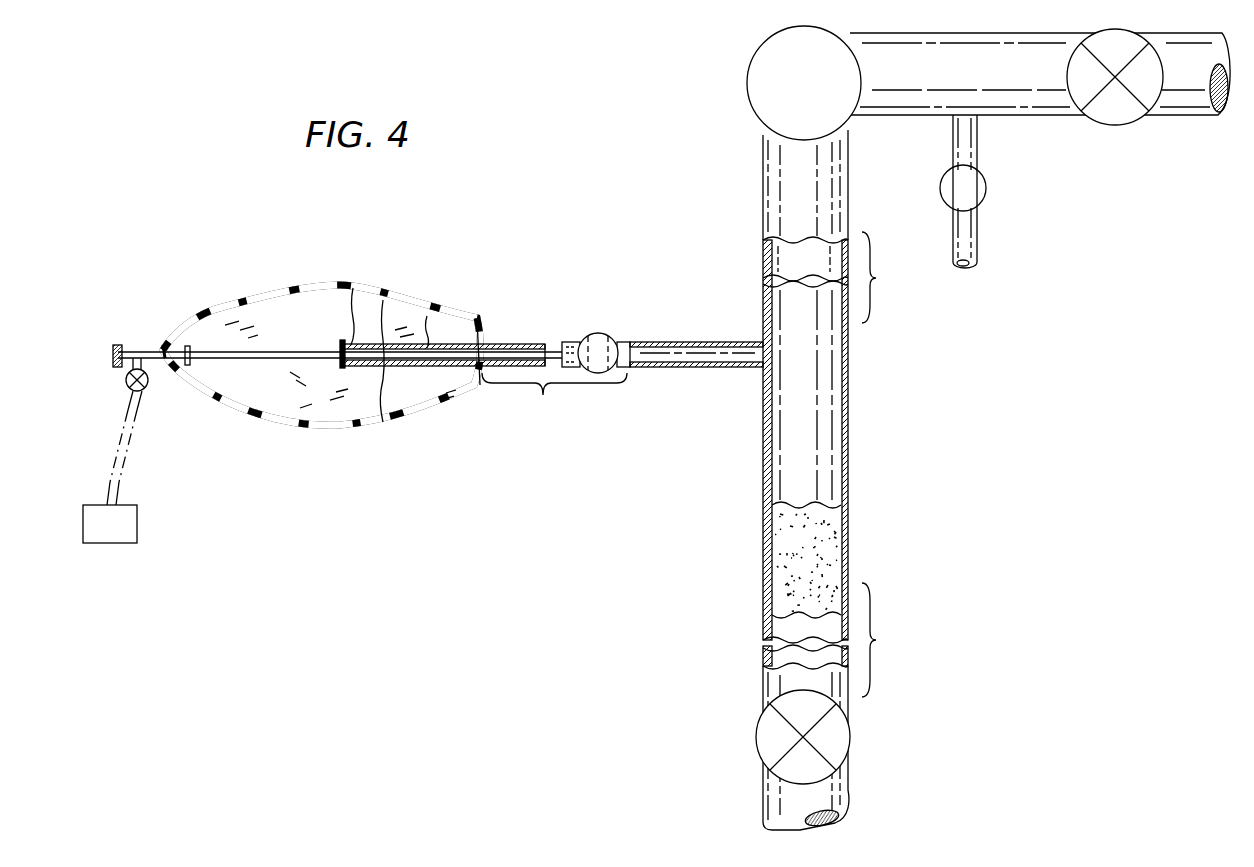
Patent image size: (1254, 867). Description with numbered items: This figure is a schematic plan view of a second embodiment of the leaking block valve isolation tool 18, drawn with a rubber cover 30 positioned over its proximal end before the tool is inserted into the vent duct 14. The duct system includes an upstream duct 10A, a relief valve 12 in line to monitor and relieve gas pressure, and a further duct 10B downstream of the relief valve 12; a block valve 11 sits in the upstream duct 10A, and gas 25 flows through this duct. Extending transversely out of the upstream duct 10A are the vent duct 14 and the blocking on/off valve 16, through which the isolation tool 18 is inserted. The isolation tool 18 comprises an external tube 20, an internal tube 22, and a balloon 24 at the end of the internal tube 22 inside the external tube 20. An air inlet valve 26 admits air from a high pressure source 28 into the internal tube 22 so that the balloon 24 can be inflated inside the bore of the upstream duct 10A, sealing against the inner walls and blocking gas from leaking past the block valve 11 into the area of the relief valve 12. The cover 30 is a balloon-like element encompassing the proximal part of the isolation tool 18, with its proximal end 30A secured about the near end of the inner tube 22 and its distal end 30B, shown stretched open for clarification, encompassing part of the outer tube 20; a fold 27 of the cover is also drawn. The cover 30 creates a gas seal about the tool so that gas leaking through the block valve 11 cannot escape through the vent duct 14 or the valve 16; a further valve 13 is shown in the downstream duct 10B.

The upstream duct 10A is at (850, 577).
The downstream duct 10B is at (1012, 117).
The block valve 11 is at (852, 740).
The relief valve 12 is at (752, 55).
The upper valve 13 is at (1140, 122).
The vent duct 14 is at (683, 342).
The blocking valve 16 is at (607, 335).
The leaking block valve isolation tool 18 is at (357, 393).
The external tube 20 is at (360, 343).
The internal tube 22 is at (155, 350).
The balloon 24 is at (511, 345).
The gas 25 is at (810, 532).
The air inlet valve 26 is at (146, 388).
The balloon fold 27 is at (423, 310).
The high pressure source 28 is at (138, 520).
The rubber cover 30 is at (258, 300).
The proximal end of cover 30A is at (165, 348).
The distal end of cover 30B is at (463, 320).